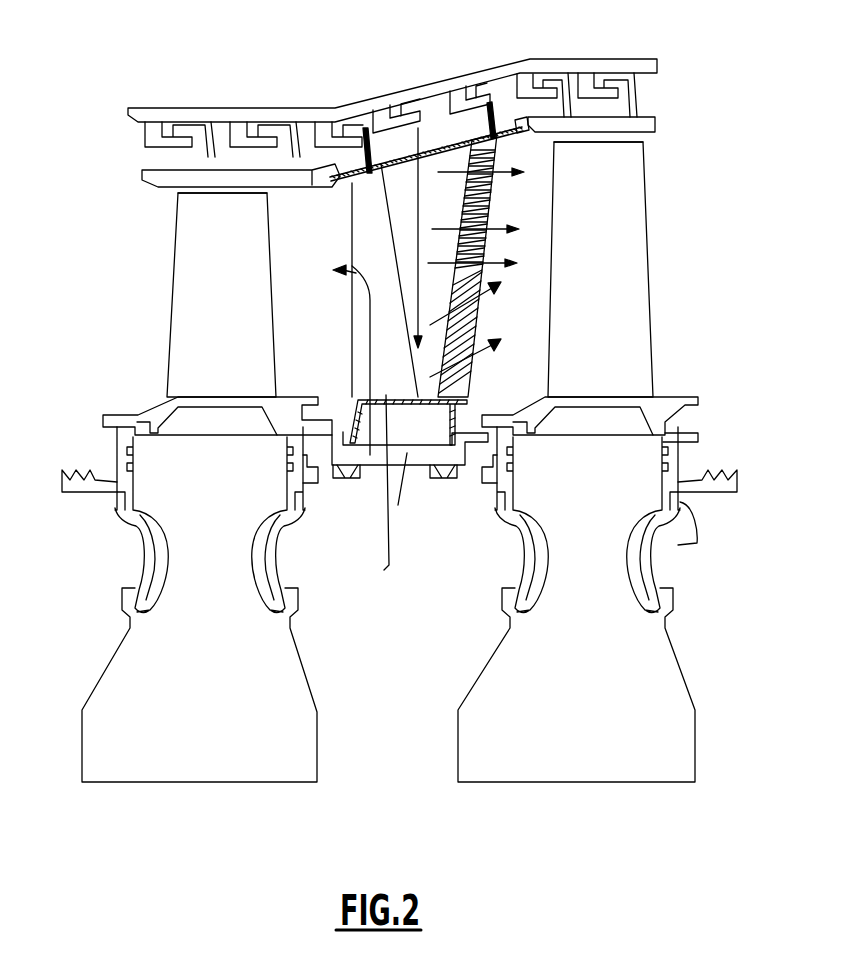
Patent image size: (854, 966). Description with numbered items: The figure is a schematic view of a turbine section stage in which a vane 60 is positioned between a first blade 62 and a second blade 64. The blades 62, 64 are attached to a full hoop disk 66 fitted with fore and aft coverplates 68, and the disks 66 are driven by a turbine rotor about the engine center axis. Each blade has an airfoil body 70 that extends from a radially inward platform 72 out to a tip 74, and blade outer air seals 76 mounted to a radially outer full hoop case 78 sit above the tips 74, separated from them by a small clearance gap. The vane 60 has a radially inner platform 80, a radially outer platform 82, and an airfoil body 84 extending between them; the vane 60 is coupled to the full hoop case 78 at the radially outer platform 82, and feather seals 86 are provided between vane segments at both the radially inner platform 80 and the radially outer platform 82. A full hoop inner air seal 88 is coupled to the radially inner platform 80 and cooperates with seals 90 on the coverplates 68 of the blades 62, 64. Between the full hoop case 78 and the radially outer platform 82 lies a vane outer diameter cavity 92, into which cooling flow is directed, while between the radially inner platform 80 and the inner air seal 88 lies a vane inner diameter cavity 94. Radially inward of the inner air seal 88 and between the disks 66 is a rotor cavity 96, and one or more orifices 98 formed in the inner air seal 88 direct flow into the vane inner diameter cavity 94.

The vane 60 is at (362, 249).
The first blade 62 is at (192, 291).
The second blade 64 is at (630, 249).
The full hoop disk 66 is at (302, 732).
The coverplate 68 is at (114, 507).
The airfoil body 70 is at (187, 330).
The platform 72 is at (102, 420).
The tip 74 is at (178, 195).
The blade outer air seal 76 is at (143, 173).
The full hoop case 78 is at (638, 63).
The radially inner platform 80 is at (498, 397).
The radially outer platform 82 is at (513, 133).
The airfoil body 84 is at (365, 339).
The feather seal 86 is at (367, 180).
The inner air seal 88 is at (333, 453).
The seal 90 is at (350, 485).
The vane outer diameter cavity 92 is at (420, 113).
The vane inner diameter cavity 94 is at (387, 553).
The rotor cavity 96 is at (320, 572).
The orifice 98 is at (398, 500).